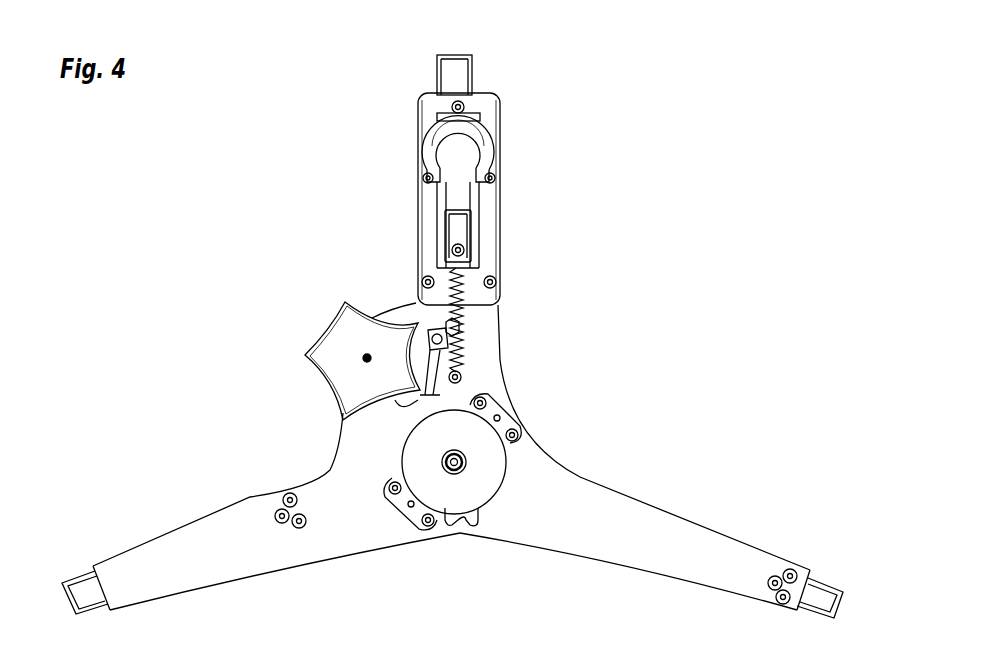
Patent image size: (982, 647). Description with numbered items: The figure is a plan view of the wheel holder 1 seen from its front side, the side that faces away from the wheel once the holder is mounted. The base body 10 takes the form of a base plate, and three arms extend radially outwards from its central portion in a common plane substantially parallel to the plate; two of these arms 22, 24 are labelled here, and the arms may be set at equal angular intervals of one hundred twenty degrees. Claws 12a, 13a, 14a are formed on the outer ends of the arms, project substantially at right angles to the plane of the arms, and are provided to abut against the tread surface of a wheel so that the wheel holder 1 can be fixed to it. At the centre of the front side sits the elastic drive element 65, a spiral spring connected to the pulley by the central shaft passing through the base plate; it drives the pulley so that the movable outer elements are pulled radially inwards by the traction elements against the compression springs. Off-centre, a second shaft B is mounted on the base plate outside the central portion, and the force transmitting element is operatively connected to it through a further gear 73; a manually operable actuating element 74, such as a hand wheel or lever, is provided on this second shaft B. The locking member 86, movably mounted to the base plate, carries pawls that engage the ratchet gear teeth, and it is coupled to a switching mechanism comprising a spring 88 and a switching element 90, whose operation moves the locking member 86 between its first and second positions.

The wheel holder 1 is at (670, 195).
The base body 10 is at (341, 528).
The claw 12a is at (484, 62).
The claw 13a is at (830, 566).
The claw 14a is at (72, 566).
The arm 22 is at (529, 155).
The arm 24 is at (184, 509).
The elastic drive element 65 is at (457, 497).
The gear 73 is at (720, 516).
The manually operable actuating element 74 is at (357, 303).
The locking member 86 is at (427, 340).
The spring 88 is at (470, 330).
The switching element 90 is at (464, 193).
The second shaft B is at (366, 359).